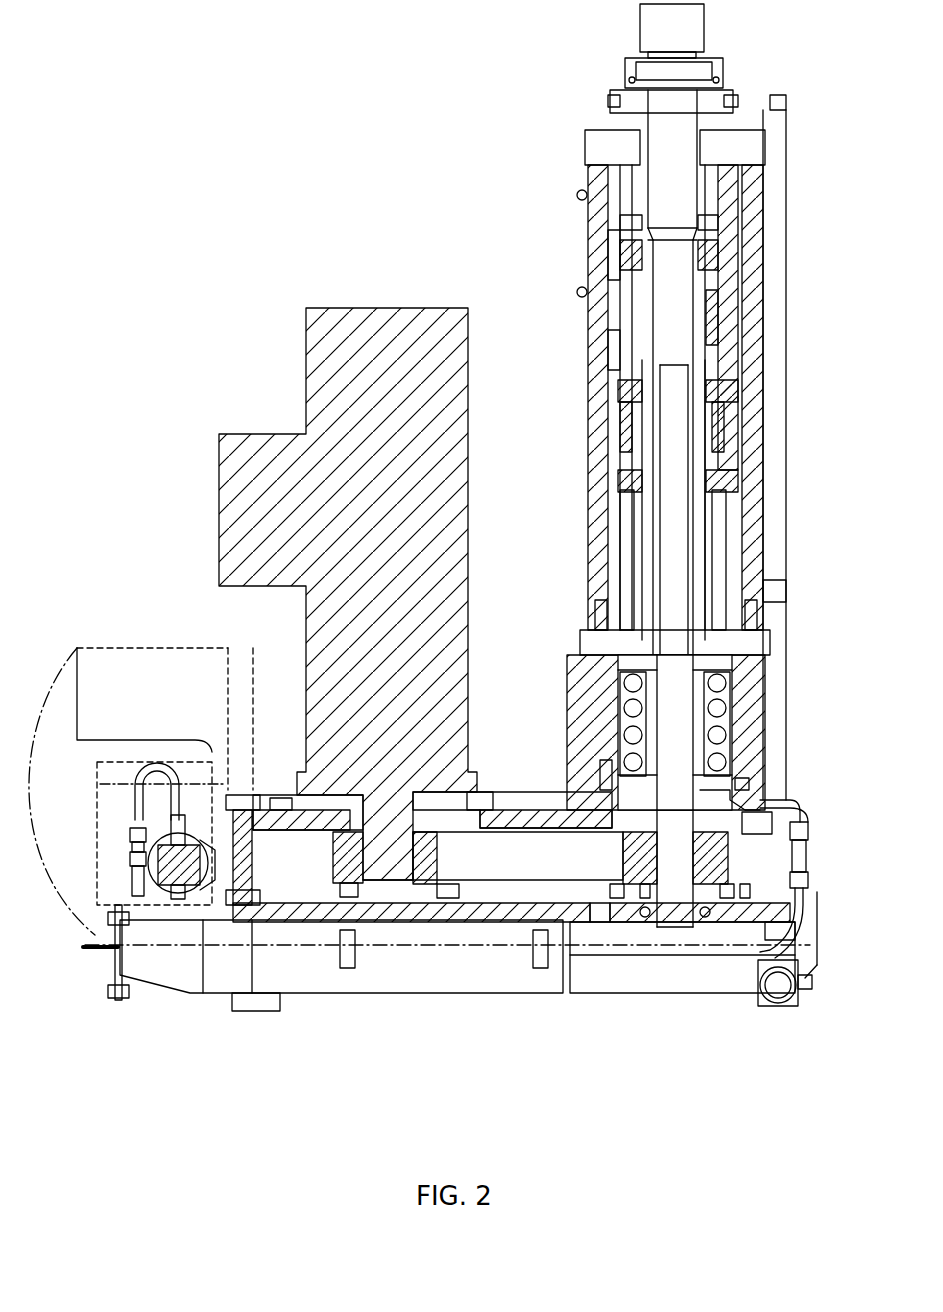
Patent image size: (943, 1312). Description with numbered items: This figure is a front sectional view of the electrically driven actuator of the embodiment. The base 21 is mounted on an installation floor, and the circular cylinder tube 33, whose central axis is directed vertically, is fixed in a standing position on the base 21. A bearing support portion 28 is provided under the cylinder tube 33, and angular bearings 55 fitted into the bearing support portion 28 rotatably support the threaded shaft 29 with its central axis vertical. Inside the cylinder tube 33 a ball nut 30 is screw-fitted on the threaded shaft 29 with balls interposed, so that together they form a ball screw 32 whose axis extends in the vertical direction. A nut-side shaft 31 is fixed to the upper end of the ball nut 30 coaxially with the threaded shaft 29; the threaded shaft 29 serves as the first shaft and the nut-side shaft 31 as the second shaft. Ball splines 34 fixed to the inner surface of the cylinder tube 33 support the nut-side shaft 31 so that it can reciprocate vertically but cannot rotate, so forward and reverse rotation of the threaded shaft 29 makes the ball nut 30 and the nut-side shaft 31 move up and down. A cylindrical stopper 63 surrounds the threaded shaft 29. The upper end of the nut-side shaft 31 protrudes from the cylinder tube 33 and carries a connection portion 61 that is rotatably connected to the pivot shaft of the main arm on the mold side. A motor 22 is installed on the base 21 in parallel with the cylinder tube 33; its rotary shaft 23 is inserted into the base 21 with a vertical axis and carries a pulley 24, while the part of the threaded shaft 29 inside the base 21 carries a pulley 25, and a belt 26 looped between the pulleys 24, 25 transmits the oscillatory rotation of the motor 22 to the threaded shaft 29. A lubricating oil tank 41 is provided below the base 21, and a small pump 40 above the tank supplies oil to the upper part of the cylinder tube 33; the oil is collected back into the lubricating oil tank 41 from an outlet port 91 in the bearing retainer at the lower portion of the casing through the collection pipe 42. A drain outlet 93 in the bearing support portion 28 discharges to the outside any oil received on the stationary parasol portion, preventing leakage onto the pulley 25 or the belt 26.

The base 21 is at (540, 820).
The motor 22 is at (315, 620).
The rotary shaft 23 is at (388, 860).
The pulley 24 is at (345, 890).
The pulley 25 is at (630, 895).
The belt 26 is at (506, 860).
The bearing support portion 28 is at (745, 708).
The threaded shaft 29 is at (677, 568).
The ball nut 30 is at (703, 545).
The nut-side shaft 31 is at (673, 318).
The ball screw 32 is at (858, 548).
The cylinder tube 33 is at (745, 435).
The ball spline 34 is at (712, 272).
The pump 40 is at (135, 855).
The lubricating oil tank 41 is at (118, 972).
The collection pipe 42 is at (808, 878).
The angular bearing 55 is at (720, 680).
The connection portion 61 is at (693, 33).
The cylindrical stopper 63 is at (722, 518).
The outlet port 91 is at (726, 804).
The drain outlet 93 is at (790, 800).